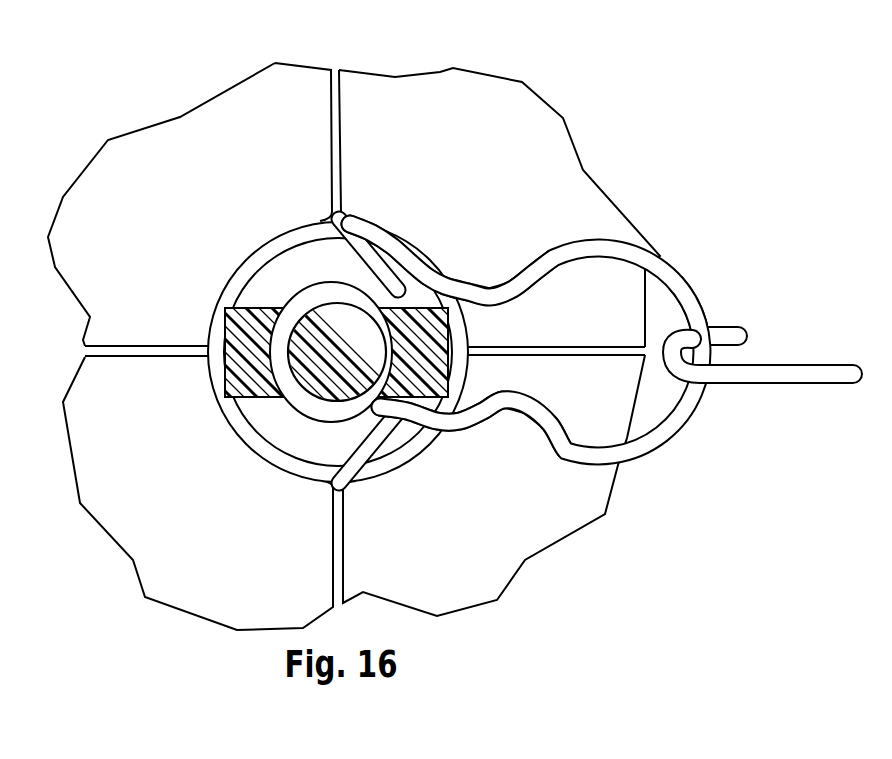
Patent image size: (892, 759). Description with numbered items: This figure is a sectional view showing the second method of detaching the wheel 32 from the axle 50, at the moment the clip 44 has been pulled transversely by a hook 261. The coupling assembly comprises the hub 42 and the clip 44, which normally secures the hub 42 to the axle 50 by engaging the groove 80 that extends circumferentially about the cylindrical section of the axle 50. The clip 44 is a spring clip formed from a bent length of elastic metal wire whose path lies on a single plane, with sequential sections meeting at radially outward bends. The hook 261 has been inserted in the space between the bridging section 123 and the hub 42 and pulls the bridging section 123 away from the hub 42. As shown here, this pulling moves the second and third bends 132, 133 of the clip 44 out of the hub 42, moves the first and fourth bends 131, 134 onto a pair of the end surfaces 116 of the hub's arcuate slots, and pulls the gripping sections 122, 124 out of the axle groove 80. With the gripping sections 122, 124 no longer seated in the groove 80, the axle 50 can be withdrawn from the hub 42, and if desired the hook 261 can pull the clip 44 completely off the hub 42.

The wheel 32 is at (520, 153).
The hub 42 is at (208, 382).
The clip 44 is at (684, 256).
The axle 50 is at (280, 383).
The groove 80 is at (306, 284).
The end surfaces 116 is at (272, 308).
The second section 122 is at (462, 272).
The third section 123 is at (702, 300).
The fourth section 124 is at (474, 430).
The first bend 131 is at (454, 318).
The second bend 132 is at (505, 310).
The third bend 133 is at (512, 391).
The fourth bend 134 is at (390, 397).
The hook 261 is at (778, 365).